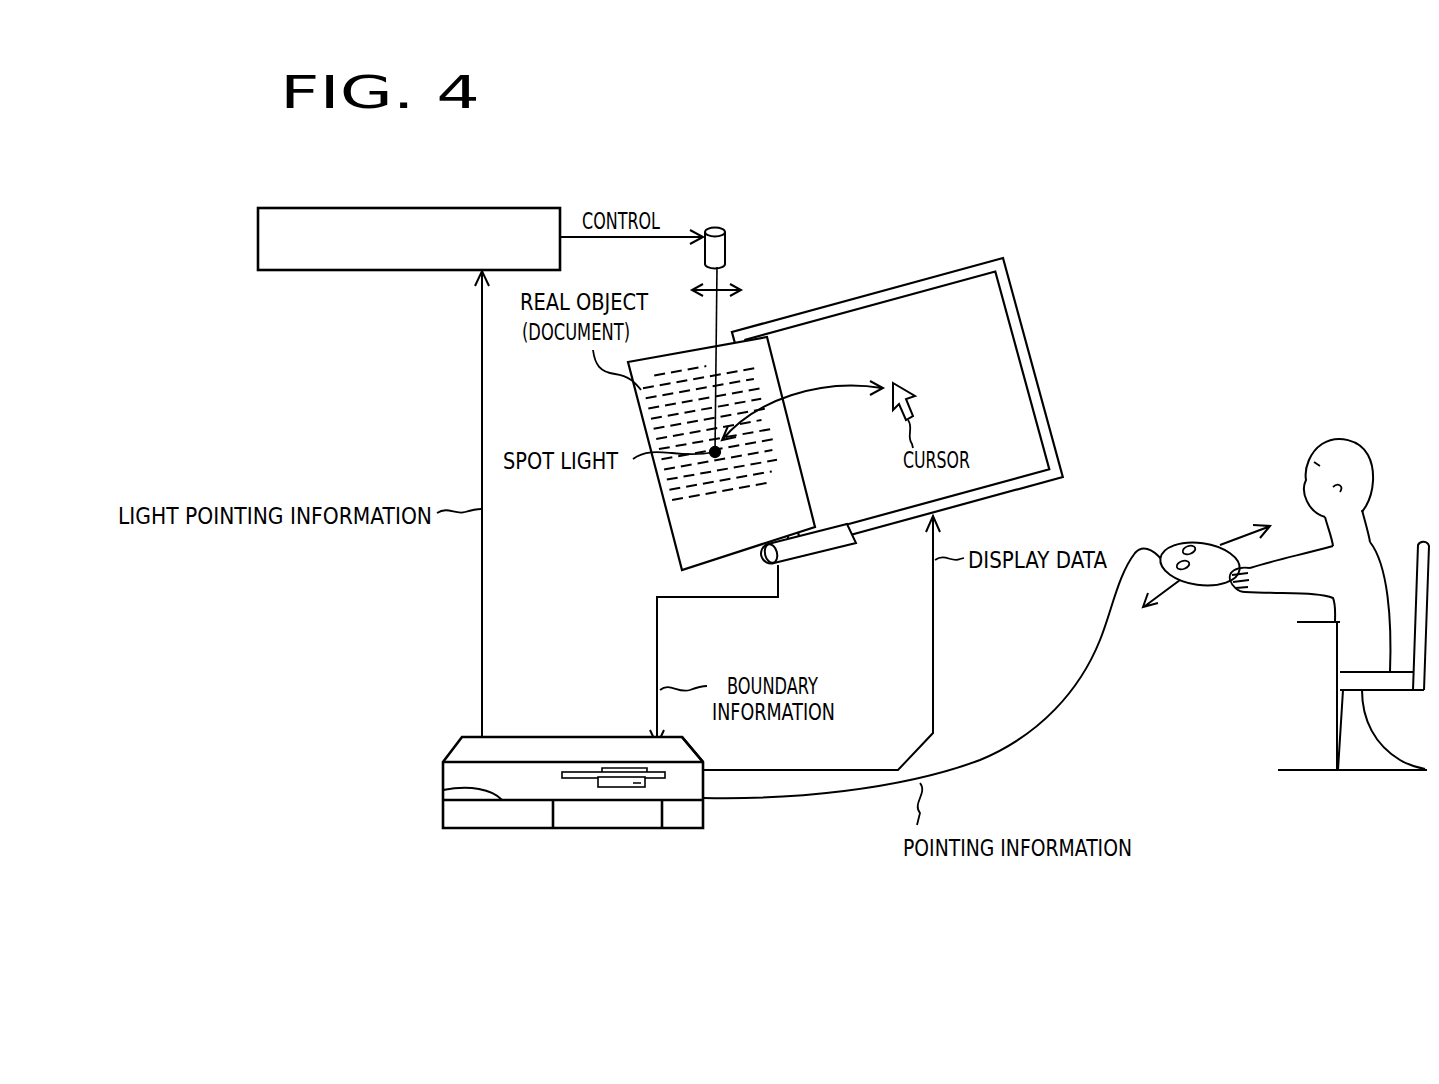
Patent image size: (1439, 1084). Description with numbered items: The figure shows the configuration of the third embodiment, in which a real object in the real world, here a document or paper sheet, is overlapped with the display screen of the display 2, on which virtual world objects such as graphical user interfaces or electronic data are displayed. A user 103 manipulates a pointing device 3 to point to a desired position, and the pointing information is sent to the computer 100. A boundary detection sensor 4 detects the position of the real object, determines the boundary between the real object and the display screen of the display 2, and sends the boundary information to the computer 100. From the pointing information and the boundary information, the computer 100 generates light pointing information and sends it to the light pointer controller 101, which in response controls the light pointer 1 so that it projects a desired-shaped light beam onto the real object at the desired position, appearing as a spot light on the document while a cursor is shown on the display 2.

The light pointer controller 101 is at (420, 208).
The light pointer 1 is at (717, 226).
The display 2 is at (935, 297).
The boundary detection sensor 4 is at (813, 548).
The computer 100 is at (600, 826).
The pointing device 3 is at (1196, 545).
The user 103 is at (1330, 441).